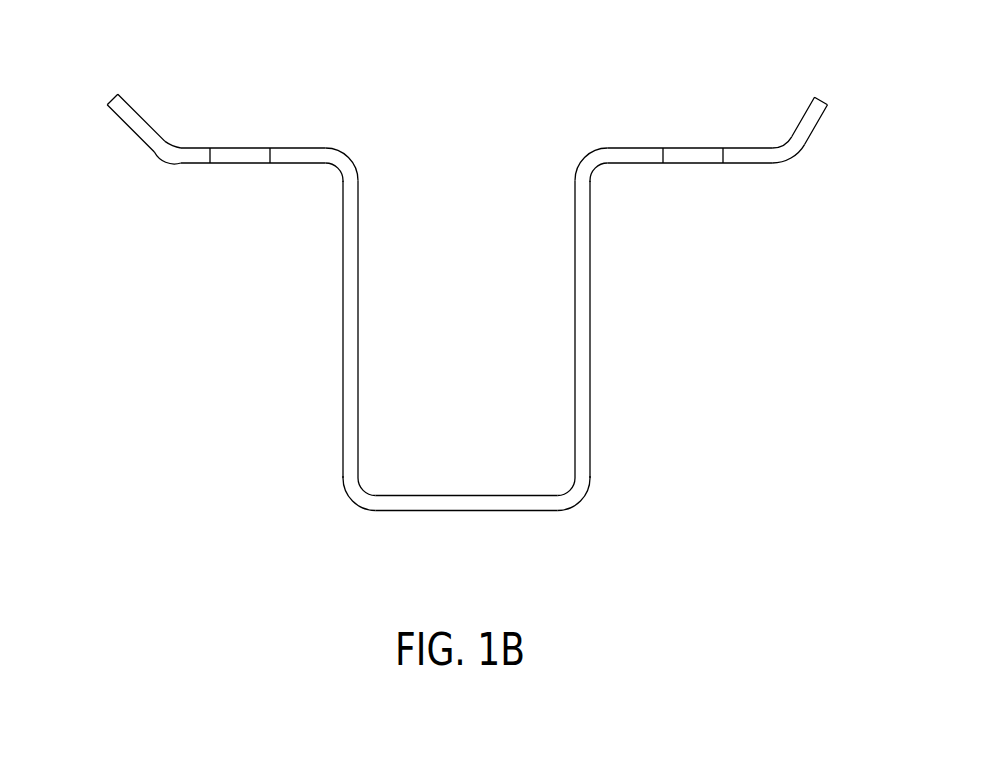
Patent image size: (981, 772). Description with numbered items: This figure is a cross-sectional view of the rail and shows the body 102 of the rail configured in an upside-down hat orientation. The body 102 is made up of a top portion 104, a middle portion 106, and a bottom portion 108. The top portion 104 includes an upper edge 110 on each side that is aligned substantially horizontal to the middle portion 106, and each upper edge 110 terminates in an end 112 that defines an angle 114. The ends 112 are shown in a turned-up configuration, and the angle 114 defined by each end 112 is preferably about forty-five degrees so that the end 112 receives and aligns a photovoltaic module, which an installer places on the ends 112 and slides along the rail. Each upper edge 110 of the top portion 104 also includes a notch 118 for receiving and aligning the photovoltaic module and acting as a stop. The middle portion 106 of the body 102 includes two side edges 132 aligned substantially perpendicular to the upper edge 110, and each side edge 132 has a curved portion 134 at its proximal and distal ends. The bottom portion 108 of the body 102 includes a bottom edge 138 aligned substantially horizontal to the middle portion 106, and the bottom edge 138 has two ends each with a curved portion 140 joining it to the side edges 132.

The body 102 is at (432, 86).
The top portion 104 is at (241, 105).
The middle portion 106 is at (286, 299).
The bottom portion 108 is at (534, 531).
The upper edge 110 is at (310, 148).
The end 112 is at (109, 100).
The angle 114 is at (148, 142).
The notch 118 is at (247, 157).
The side edge 132 is at (343, 375).
The curved portion 134 is at (337, 173).
The bottom edge 138 is at (463, 510).
The curved portion 140 is at (363, 508).